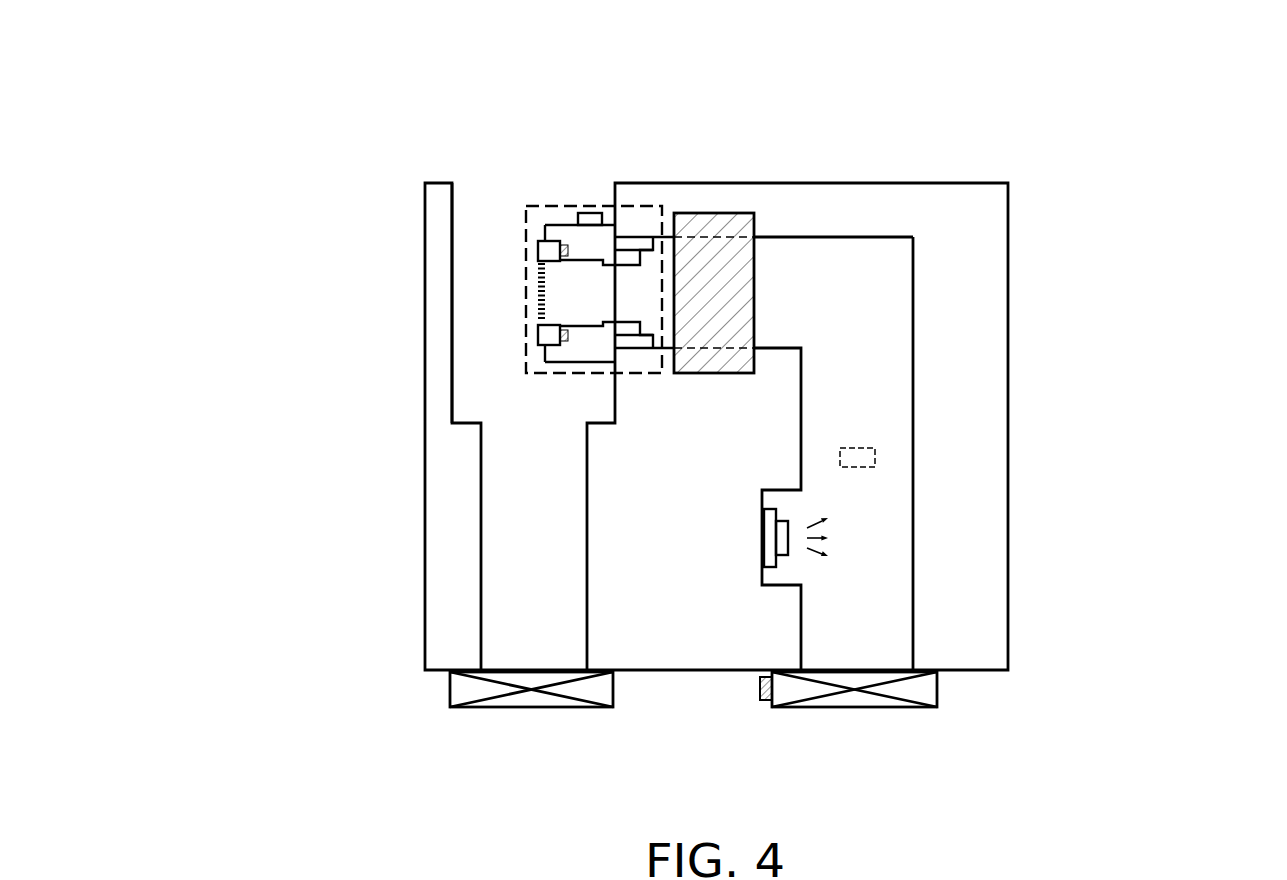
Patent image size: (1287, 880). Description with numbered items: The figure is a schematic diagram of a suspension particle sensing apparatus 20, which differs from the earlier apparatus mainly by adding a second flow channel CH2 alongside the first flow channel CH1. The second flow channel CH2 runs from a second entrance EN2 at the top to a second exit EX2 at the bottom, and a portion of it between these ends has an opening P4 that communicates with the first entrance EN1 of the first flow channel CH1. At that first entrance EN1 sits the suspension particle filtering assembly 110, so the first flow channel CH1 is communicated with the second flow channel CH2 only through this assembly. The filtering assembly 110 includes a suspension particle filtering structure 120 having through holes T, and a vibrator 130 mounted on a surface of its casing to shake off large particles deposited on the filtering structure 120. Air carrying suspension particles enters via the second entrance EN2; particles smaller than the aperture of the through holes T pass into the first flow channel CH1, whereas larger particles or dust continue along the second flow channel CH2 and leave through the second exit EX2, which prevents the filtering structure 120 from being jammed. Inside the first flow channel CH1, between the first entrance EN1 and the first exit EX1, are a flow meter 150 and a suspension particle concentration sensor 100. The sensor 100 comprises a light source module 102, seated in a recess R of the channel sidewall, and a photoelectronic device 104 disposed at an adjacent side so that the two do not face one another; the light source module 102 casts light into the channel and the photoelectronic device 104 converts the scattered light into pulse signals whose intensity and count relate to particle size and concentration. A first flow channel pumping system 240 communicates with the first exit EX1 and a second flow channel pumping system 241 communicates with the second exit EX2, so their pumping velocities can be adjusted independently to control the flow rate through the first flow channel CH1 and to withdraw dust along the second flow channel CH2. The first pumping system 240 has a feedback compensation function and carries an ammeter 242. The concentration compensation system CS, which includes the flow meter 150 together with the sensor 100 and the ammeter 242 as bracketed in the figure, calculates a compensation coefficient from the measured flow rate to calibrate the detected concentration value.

The suspension particle sensing apparatus 20 is at (1262, 785).
The suspension particle concentration sensor 100 is at (578, 447).
The light source module 102 is at (767, 537).
The photoelectronic device 104 is at (875, 458).
The suspension particle filtering assembly 110 is at (552, 375).
The suspension particle filtering structure 120 is at (540, 232).
The vibrator 130 is at (588, 213).
The flow meter 150 is at (742, 226).
The first flow channel pumping system 240 is at (855, 707).
The second flow channel pumping system 241 is at (531, 707).
The ammeter 242 is at (760, 690).
The concentration compensation system CS is at (128, 45).
The first flow channel CH1 is at (913, 272).
The second flow channel CH2 is at (452, 228).
The first entrance EN1 is at (647, 282).
The second entrance EN2 is at (489, 178).
The first exit EX1 is at (864, 646).
The second exit EX2 is at (532, 644).
The through holes T is at (522, 280).
The opening P4 is at (601, 297).
The recess R is at (790, 497).